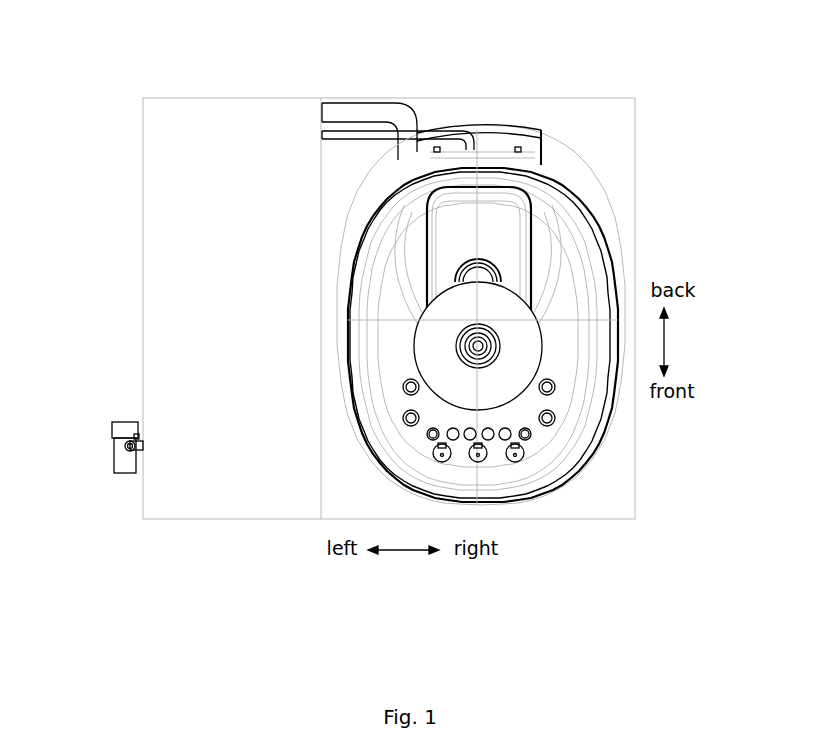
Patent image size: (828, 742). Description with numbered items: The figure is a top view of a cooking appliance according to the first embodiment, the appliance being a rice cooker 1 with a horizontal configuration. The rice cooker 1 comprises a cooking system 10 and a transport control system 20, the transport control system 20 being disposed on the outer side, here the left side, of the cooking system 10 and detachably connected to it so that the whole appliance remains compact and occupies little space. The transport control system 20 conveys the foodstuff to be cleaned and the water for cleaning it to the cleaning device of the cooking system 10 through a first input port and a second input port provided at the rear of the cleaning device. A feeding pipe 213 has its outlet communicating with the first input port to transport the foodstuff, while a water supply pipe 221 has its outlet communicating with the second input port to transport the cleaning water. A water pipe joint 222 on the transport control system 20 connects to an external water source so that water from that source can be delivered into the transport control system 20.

The rice cooker 1 is at (660, 214).
The cooking system 10 is at (575, 418).
The transport control system 20 is at (170, 235).
The feeding pipe 213 is at (375, 115).
The water supply pipe 221 is at (358, 137).
The water pipe joint 222 is at (127, 460).